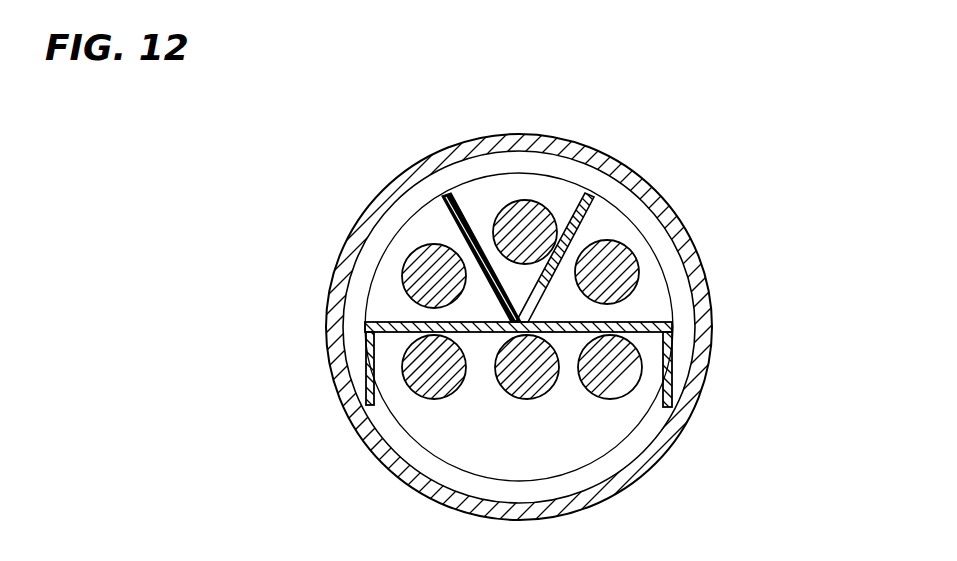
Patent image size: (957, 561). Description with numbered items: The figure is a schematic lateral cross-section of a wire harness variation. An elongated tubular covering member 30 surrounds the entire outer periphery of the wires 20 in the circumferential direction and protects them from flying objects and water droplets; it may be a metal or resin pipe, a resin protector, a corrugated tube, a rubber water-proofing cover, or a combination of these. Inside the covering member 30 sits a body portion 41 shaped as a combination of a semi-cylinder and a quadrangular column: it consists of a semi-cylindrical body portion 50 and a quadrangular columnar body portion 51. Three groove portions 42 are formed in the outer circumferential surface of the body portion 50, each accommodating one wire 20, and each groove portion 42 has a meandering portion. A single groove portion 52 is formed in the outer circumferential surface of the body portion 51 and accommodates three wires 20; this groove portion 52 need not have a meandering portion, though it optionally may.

The wire 20 is at (524, 202).
The covering member 30 is at (604, 157).
The body portion 41 is at (478, 280).
The groove portion 42 is at (478, 280).
The body portion 50 is at (593, 218).
The body portion 51 is at (666, 346).
The groove portion 52 is at (378, 385).